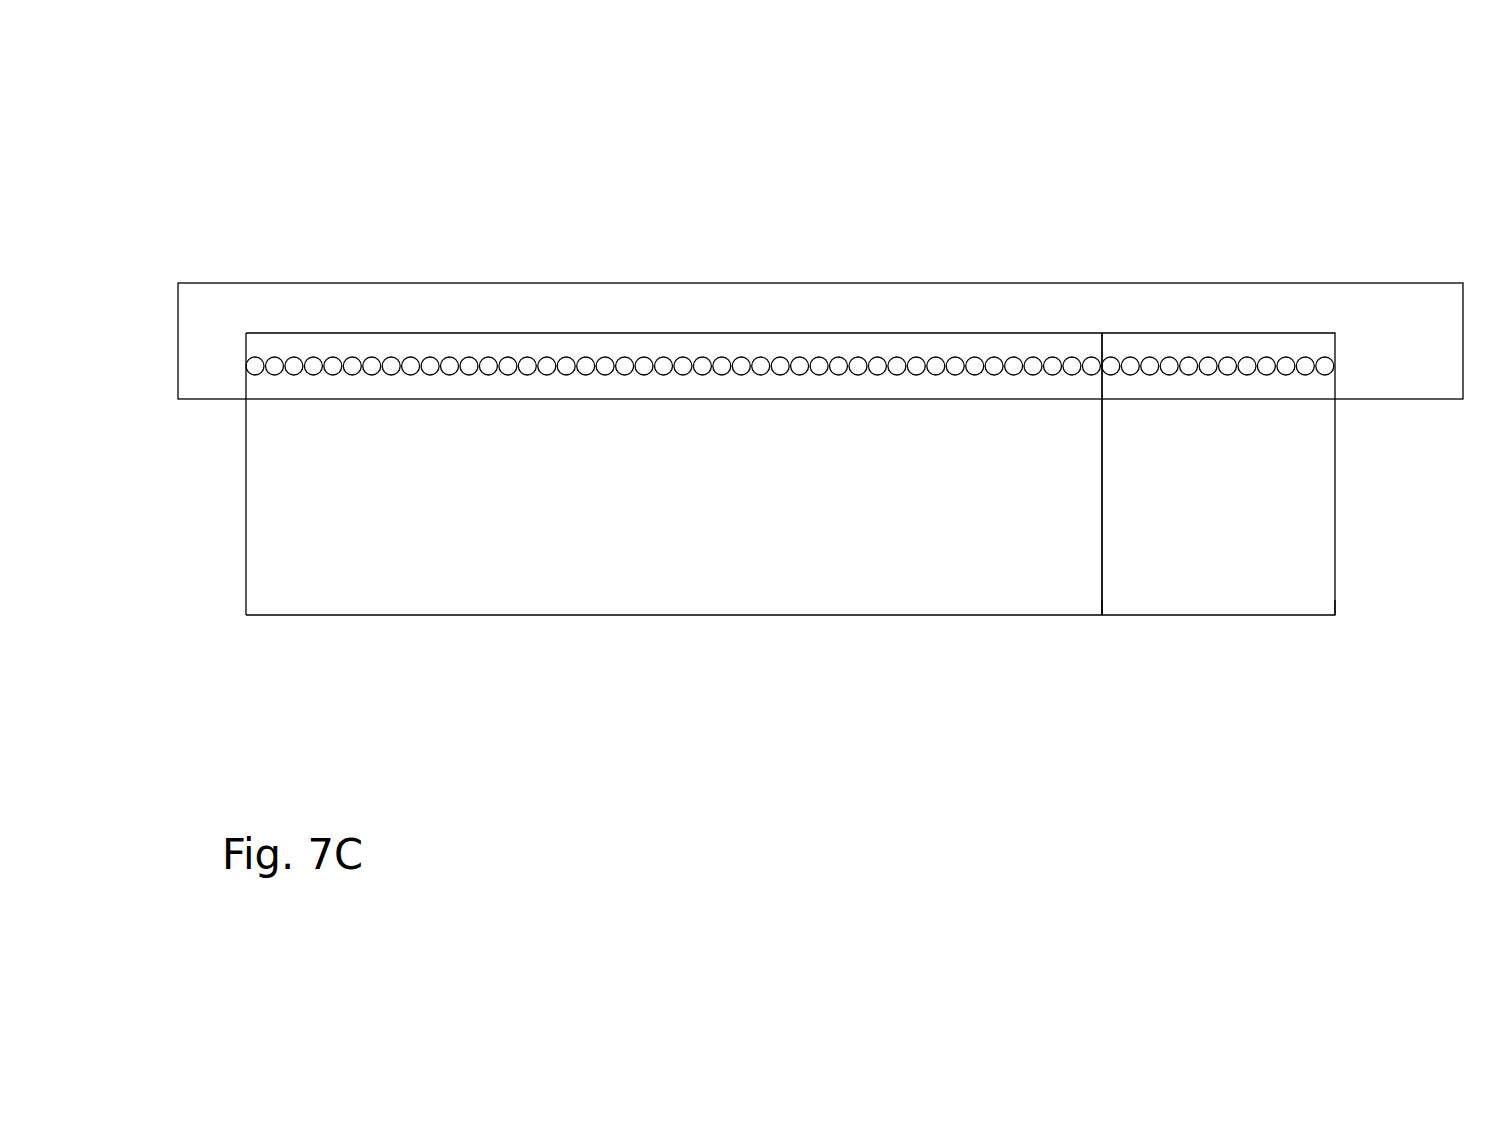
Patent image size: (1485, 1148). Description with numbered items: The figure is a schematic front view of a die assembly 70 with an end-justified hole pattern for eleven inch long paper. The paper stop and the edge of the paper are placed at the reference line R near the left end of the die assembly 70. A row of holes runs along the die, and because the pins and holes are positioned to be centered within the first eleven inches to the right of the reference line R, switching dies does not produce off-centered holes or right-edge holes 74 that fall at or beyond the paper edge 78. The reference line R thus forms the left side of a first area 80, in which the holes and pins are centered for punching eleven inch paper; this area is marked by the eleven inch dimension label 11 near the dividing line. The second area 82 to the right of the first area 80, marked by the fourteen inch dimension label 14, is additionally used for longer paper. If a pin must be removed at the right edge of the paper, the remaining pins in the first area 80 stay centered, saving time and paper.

The die assembly 70 is at (792, 256).
The reference line R is at (246, 332).
The right-edge holes 74 is at (790, 249).
The paper edge 78 is at (1260, 482).
The first area 80 is at (674, 561).
The second area 82 is at (1210, 559).
The first contact element 11 is at (1069, 643).
The second contact element 14 is at (1305, 644).